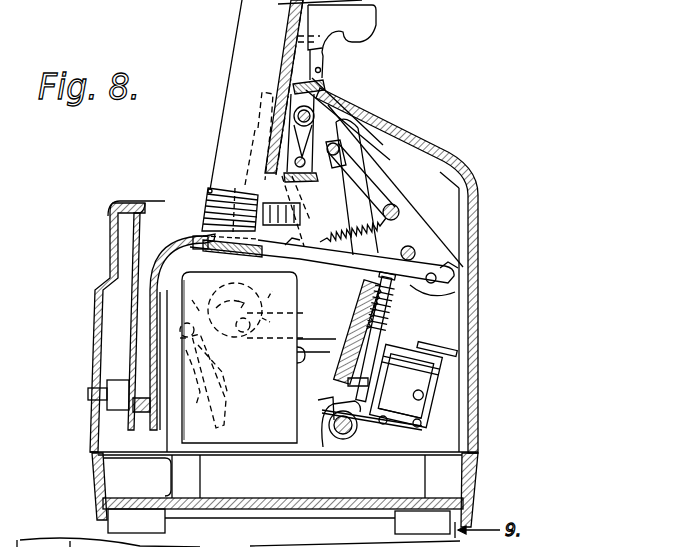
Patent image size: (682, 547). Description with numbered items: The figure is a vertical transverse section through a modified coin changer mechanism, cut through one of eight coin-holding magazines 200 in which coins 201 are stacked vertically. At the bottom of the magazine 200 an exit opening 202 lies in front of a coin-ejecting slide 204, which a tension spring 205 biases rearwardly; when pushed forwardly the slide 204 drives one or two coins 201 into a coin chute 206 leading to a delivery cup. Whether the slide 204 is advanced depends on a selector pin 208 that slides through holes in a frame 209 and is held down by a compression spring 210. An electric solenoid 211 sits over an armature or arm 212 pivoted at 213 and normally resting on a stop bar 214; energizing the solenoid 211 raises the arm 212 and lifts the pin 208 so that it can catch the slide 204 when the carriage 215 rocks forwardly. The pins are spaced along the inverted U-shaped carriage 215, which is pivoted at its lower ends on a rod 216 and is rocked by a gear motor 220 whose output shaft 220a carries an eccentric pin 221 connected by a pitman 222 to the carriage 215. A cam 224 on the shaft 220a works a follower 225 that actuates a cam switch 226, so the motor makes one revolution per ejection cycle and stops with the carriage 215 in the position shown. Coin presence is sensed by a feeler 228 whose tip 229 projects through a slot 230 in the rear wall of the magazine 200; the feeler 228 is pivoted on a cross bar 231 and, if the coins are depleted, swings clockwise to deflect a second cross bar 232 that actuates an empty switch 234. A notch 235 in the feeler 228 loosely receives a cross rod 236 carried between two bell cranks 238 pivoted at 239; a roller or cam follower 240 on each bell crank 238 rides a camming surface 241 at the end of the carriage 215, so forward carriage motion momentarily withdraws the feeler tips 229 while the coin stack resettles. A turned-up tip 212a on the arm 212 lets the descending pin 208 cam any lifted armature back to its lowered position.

The coin-holding magazine 200 is at (254, 71).
The coins 201 is at (207, 189).
The exit opening 202 is at (200, 241).
The coin-ejecting slide 204 is at (368, 248).
The tension spring 205 is at (381, 241).
The coin chute 206 is at (140, 263).
The pin 208 is at (414, 383).
The frame 209 is at (336, 343).
The compression spring 210 is at (398, 318).
The electric solenoid 211 is at (405, 381).
The armature or arm 212 is at (401, 423).
The turned-up tip 212a is at (324, 408).
The pivot 213 is at (419, 427).
The stop bar 214 is at (383, 424).
The carriage 215 is at (340, 352).
The rod 216 is at (345, 428).
The gear motor 220 is at (275, 437).
The output shaft 220a is at (332, 365).
The eccentric pin 221 is at (270, 320).
The pitman 222 is at (328, 322).
The cam 224 is at (216, 304).
The follower 225 is at (185, 322).
The cam switch 226 is at (201, 438).
The feeler 228 is at (266, 202).
The feeler tip 229 is at (214, 182).
The slot 230 is at (248, 180).
The cross bar 231 is at (313, 120).
The cross bar 232 is at (345, 125).
The empty switch 234 is at (282, 255).
The notch 235 is at (356, 135).
The cross rod 236 is at (404, 147).
The bell crank 238 is at (346, 152).
The pivot 239 is at (478, 274).
The cam follower 240 is at (362, 274).
The camming surface 241 is at (400, 312).